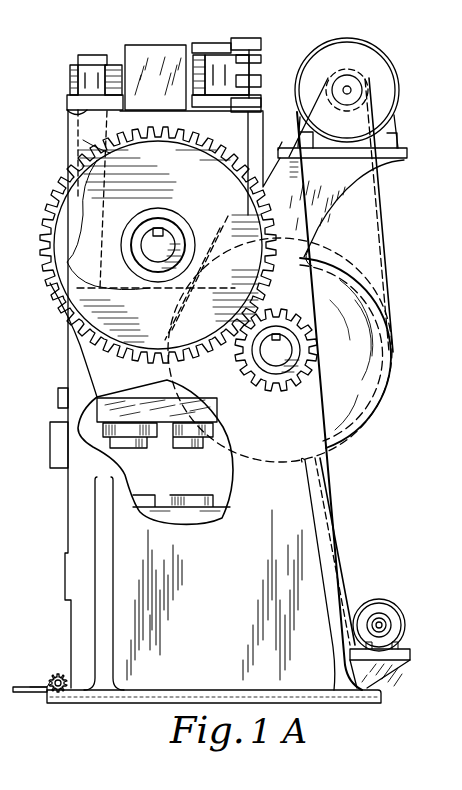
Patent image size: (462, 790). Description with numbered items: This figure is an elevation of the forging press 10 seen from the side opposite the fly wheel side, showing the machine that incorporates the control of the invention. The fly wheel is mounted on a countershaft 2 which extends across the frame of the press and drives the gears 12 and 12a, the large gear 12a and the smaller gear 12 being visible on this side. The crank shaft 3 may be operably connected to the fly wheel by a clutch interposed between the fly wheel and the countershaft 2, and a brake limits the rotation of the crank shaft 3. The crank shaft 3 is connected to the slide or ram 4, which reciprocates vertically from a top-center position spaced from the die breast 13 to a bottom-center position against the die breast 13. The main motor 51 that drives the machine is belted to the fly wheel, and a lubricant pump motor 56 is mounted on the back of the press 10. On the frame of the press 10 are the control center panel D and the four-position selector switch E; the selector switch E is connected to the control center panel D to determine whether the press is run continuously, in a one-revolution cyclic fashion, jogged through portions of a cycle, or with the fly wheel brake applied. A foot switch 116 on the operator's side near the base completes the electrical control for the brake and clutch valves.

The main motor 51 is at (354, 57).
The crank shaft 3 is at (163, 243).
The gear 12a is at (50, 283).
The four-position selector switch E is at (57, 397).
The control center panel D is at (50, 445).
The countershaft 2 is at (276, 350).
The gear 12 is at (290, 395).
The slide or ram 4 is at (163, 400).
The die breast 13 is at (233, 455).
The press 10 is at (68, 533).
The foot switch 116 is at (55, 672).
The lubricant pump motor 56 is at (385, 612).